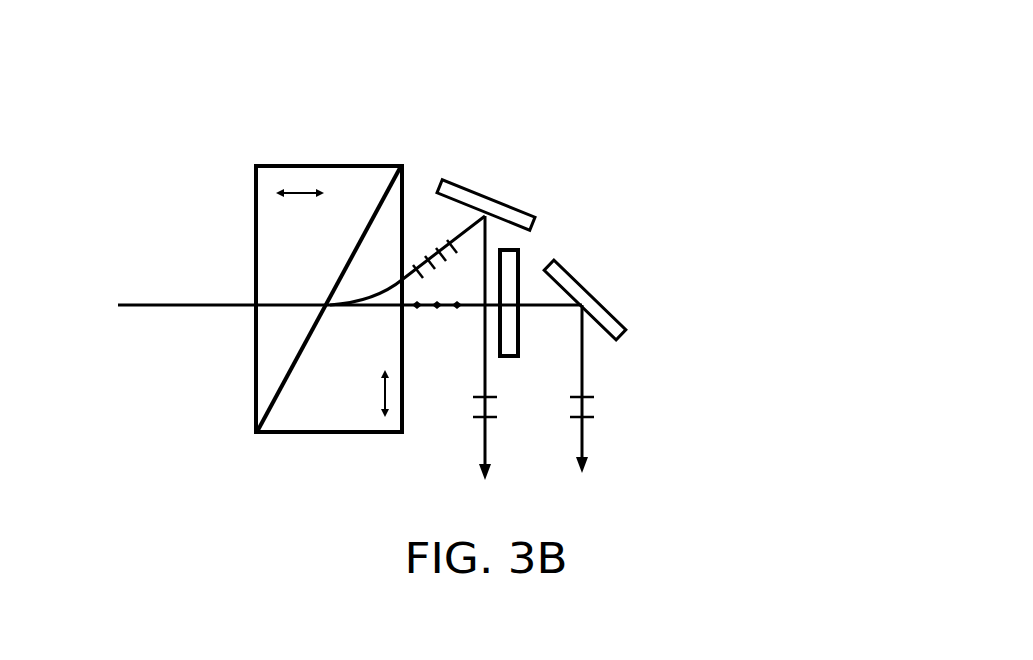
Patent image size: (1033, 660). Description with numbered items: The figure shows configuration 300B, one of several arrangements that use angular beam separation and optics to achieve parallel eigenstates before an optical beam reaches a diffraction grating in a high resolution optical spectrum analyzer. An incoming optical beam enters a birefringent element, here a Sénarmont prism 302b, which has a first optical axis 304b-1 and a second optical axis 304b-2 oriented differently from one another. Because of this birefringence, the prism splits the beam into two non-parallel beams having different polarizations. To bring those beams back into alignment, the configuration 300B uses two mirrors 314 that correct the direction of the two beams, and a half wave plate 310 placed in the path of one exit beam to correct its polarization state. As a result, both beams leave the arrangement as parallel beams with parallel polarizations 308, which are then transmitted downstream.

The configuration 300B is at (516, 34).
The Sénarmont prism 302b is at (326, 155).
The first optical axis 304b-1 is at (305, 213).
The second optical axis 304b-2 is at (349, 393).
The mirrors 314 is at (483, 183).
The half wave plate 310 is at (540, 243).
The parallel beams with parallel polarizations 308 is at (518, 479).